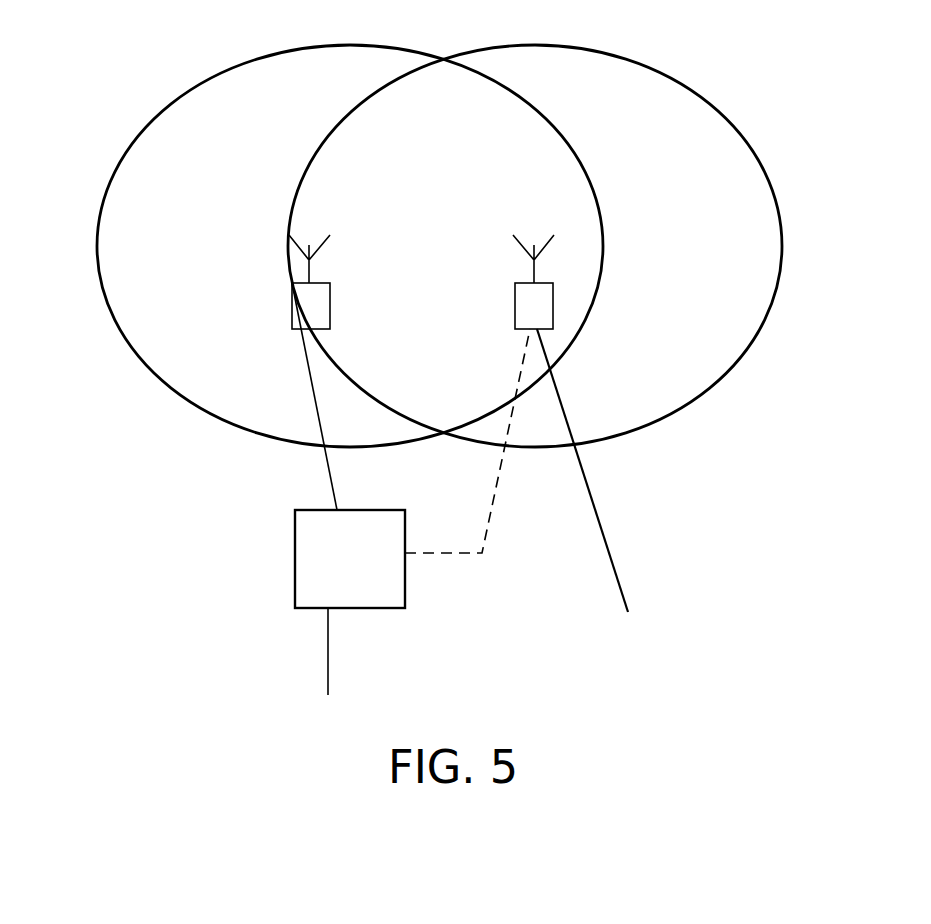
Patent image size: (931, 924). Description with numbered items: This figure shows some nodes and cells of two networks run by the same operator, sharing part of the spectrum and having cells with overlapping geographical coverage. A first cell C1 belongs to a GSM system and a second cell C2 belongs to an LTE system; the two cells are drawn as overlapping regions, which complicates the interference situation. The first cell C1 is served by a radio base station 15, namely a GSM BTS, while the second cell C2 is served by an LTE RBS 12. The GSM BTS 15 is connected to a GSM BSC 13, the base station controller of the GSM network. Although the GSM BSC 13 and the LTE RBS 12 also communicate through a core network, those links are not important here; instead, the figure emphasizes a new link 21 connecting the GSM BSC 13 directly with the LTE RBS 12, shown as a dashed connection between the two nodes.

The first cell C1 is at (193, 88).
The second cell C2 is at (688, 88).
The radio base station 15 is at (291, 316).
The LTE RBS 12 is at (553, 303).
The GSM BSC 13 is at (318, 562).
The link 21 is at (492, 507).